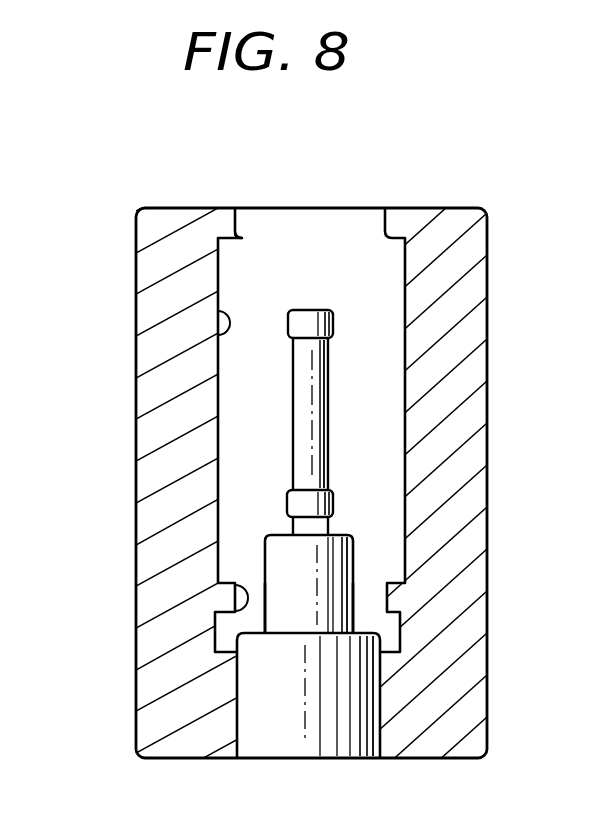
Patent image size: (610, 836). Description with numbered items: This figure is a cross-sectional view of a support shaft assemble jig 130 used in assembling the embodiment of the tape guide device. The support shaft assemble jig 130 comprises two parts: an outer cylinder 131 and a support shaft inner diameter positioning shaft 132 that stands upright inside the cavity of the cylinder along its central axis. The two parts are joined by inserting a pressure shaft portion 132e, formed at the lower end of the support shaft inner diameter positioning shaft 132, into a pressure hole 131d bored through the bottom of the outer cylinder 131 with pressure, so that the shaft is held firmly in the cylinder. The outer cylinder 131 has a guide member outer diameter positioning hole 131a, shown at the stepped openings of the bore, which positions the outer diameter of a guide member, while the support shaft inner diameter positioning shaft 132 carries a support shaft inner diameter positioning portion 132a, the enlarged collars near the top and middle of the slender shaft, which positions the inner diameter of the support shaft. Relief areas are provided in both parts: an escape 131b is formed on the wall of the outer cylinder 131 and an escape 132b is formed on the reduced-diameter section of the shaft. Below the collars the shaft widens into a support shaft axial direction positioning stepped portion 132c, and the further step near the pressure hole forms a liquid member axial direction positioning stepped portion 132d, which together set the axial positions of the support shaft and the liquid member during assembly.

The support shaft assemble jig 130 is at (431, 170).
The outer cylinder 131 is at (468, 207).
The guide member outer diameter positioning hole 131a is at (248, 207).
The escape 131b is at (216, 320).
The pressure hole 131d is at (237, 728).
The support shaft inner diameter positioning shaft 132 is at (316, 308).
The support shaft inner diameter positioning portion 132a is at (334, 326).
The escape 132b is at (329, 393).
The support shaft axial direction positioning stepped portion 132c is at (282, 533).
The liquid member axial direction positioning stepped portion 132d is at (378, 607).
The pressure shaft portion 132e is at (232, 640).